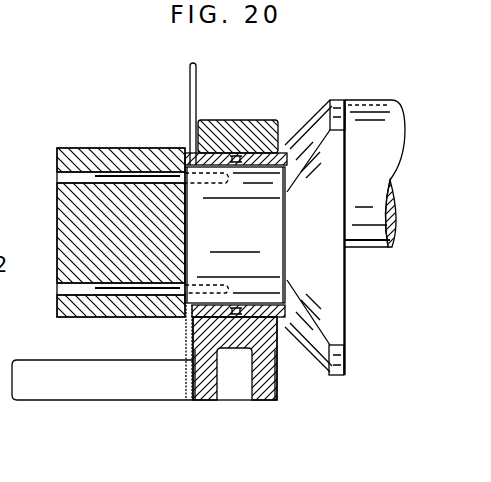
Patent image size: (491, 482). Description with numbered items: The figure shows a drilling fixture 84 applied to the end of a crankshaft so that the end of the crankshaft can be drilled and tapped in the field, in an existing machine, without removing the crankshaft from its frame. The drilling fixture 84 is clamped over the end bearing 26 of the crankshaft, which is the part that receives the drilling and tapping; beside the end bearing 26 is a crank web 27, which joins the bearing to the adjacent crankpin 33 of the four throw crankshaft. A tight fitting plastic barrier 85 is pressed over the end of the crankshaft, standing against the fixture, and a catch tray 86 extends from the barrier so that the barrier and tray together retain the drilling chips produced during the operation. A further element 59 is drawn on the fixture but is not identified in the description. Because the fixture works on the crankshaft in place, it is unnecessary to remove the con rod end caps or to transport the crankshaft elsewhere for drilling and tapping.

The end bearing 26 is at (236, 235).
The crank web 27 is at (313, 133).
The crankpin 33 is at (370, 132).
The bearing ring 59 is at (231, 130).
The drilling fixture 84 is at (77, 148).
The plastic barrier 85 is at (190, 88).
The catch tray 86 is at (82, 401).